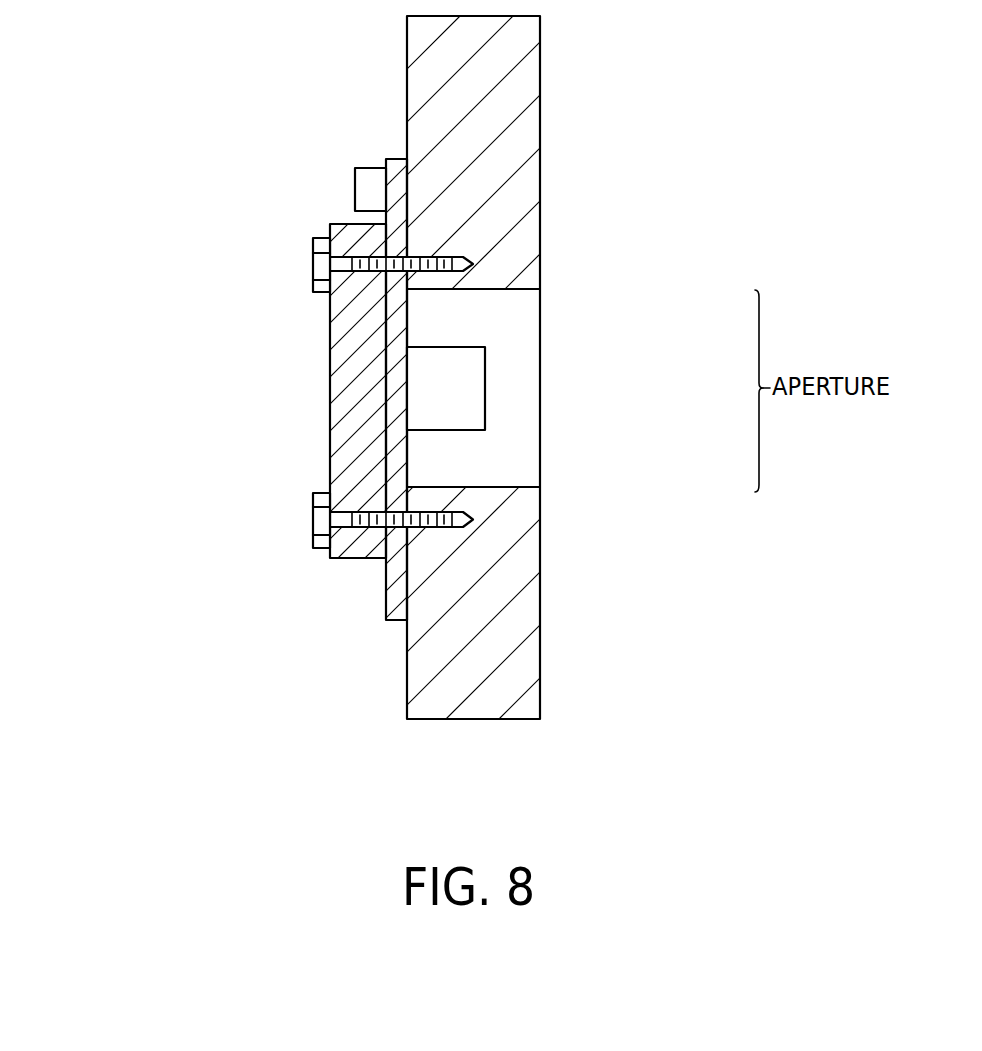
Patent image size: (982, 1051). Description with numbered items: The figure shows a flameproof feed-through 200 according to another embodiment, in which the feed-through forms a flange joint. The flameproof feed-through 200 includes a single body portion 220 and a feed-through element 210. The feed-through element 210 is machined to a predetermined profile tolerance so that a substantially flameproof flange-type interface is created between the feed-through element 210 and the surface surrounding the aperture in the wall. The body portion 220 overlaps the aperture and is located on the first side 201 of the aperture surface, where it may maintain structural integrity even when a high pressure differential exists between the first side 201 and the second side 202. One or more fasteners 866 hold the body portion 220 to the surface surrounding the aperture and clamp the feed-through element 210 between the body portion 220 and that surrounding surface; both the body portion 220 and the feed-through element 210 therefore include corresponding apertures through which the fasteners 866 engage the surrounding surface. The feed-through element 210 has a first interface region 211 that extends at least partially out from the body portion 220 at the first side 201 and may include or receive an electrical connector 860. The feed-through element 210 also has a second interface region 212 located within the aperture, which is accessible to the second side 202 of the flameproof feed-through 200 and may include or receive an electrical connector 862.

The flameproof feed-through 200 is at (246, 725).
The first side 201 is at (90, 346).
The second side 202 is at (747, 666).
The feed-through element 210 is at (397, 622).
The first interface region 211 is at (322, 160).
The second interface region 212 is at (588, 347).
The body portion 220 is at (330, 410).
The electrical connector 860 is at (362, 167).
The electrical connector 862 is at (485, 360).
The fasteners 866 is at (313, 265).